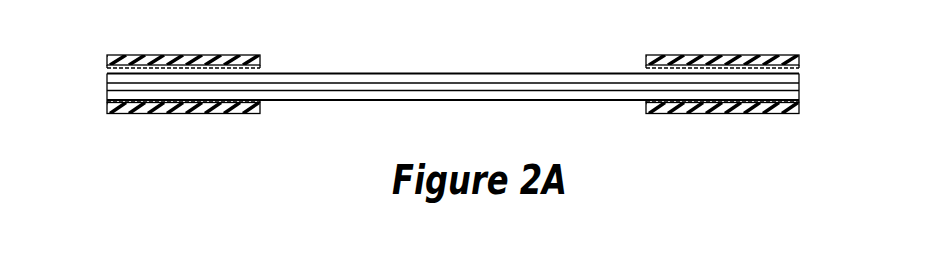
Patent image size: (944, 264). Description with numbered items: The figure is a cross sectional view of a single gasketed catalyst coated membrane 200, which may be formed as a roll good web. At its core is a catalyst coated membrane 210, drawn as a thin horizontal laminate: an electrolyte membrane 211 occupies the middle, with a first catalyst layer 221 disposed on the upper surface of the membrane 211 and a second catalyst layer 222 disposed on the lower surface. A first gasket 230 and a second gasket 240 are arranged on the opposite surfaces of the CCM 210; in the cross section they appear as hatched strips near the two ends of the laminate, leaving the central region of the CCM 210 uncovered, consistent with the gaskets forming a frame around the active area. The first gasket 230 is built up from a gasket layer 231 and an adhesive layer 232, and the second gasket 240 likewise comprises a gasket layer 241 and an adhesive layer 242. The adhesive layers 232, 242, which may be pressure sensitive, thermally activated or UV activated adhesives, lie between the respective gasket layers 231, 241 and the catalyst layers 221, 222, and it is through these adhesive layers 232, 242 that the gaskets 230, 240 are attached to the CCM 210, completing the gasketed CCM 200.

The gasketed catalyst coated membrane 200 is at (498, 42).
The catalyst coated membrane 210 is at (481, 84).
The electrolyte membrane 211 is at (397, 83).
The first catalyst layer 221 is at (319, 72).
The second catalyst layer 222 is at (511, 96).
The first gasket 230 is at (427, 44).
The gasket layer 231 is at (223, 59).
The adhesive layer 232 is at (105, 68).
The second gasket 240 is at (427, 124).
The gasket layer 241 is at (198, 112).
The adhesive layer 242 is at (141, 105).